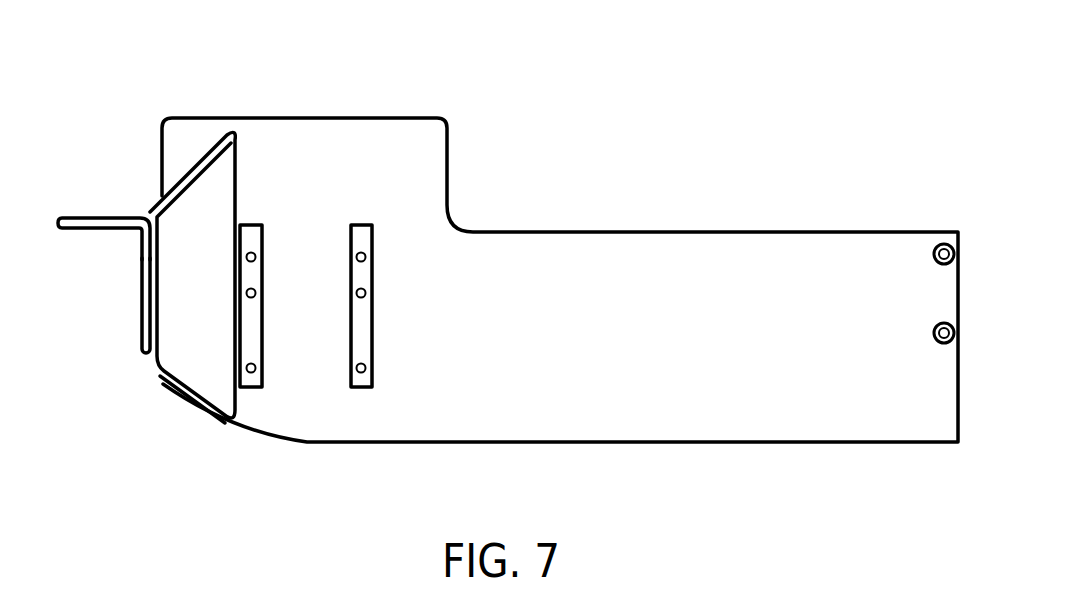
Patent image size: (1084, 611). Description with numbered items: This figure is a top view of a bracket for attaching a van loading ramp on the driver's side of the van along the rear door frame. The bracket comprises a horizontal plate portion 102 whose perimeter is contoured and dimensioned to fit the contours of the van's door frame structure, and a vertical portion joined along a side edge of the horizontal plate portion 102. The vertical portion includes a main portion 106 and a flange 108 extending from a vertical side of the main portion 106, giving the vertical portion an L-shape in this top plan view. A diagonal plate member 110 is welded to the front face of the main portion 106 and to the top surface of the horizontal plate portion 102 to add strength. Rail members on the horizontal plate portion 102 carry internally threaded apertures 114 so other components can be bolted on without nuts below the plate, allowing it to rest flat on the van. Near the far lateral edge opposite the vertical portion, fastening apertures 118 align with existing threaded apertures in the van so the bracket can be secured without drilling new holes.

The horizontal plate portion 102 is at (589, 315).
The main portion 106 is at (142, 315).
The flange 108 is at (83, 222).
The diagonal plate member 110 is at (192, 362).
The apertures 114 is at (362, 291).
The fastening apertures 118 is at (933, 247).